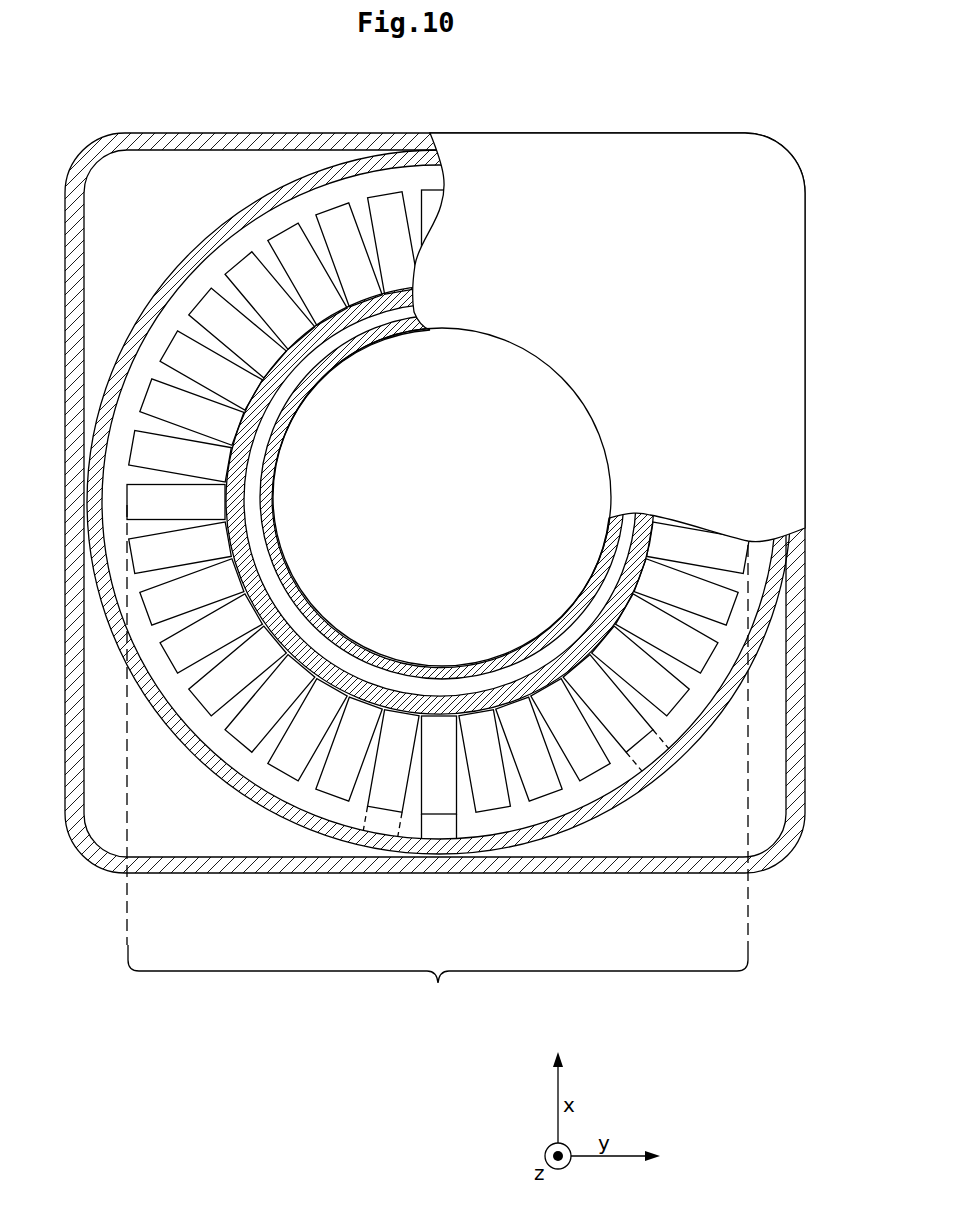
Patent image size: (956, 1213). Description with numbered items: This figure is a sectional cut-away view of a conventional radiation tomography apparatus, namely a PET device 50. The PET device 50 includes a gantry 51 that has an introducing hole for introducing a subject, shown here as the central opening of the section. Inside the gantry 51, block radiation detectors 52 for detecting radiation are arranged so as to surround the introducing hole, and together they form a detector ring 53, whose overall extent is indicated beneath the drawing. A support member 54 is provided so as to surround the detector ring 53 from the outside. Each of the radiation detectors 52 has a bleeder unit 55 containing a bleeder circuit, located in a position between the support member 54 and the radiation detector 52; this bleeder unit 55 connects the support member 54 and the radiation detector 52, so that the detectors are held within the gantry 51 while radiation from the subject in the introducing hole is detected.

The PET device 50 is at (611, 114).
The gantry 51 is at (657, 335).
The block radiation detector 52 is at (360, 755).
The detector ring 53 is at (437, 764).
The support member 54 is at (212, 776).
The bleeder unit 55 is at (622, 773).